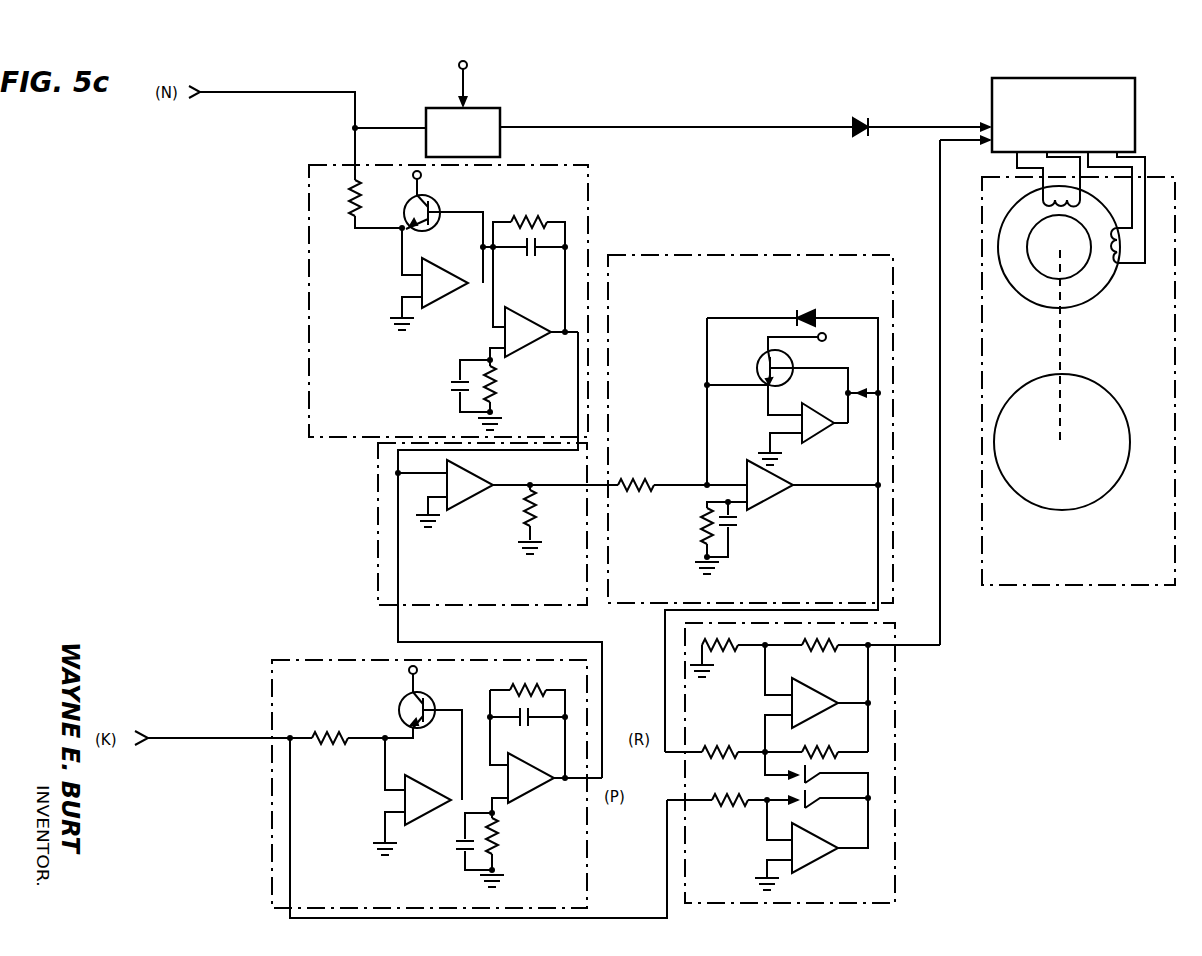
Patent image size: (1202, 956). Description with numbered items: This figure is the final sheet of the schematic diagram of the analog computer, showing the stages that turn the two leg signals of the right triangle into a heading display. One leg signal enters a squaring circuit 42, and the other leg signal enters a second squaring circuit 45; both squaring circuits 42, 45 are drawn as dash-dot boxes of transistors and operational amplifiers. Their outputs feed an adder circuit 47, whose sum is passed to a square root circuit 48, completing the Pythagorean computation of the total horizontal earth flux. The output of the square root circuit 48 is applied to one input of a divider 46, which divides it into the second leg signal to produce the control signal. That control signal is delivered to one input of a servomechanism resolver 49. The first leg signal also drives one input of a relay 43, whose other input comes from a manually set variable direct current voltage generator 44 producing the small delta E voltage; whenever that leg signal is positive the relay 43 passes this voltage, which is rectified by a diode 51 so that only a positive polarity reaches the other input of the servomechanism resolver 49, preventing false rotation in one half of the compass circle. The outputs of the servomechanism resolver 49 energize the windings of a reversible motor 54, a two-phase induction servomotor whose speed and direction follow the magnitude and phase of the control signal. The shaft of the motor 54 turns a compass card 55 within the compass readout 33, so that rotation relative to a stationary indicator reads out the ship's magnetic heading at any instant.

The compass readout 33 is at (1003, 585).
The squaring circuit 42 is at (309, 259).
The relay 43 is at (500, 113).
The variable direct current voltage generator 44 is at (459, 66).
The squaring circuit 45 is at (314, 661).
The divider 46 is at (897, 703).
The adder circuit 47 is at (378, 566).
The square root circuit 48 is at (830, 243).
The servomechanism resolver 49 is at (1088, 78).
The diode 51 is at (860, 118).
The reversible motor 54 is at (1098, 293).
The compass card 55 is at (1097, 388).